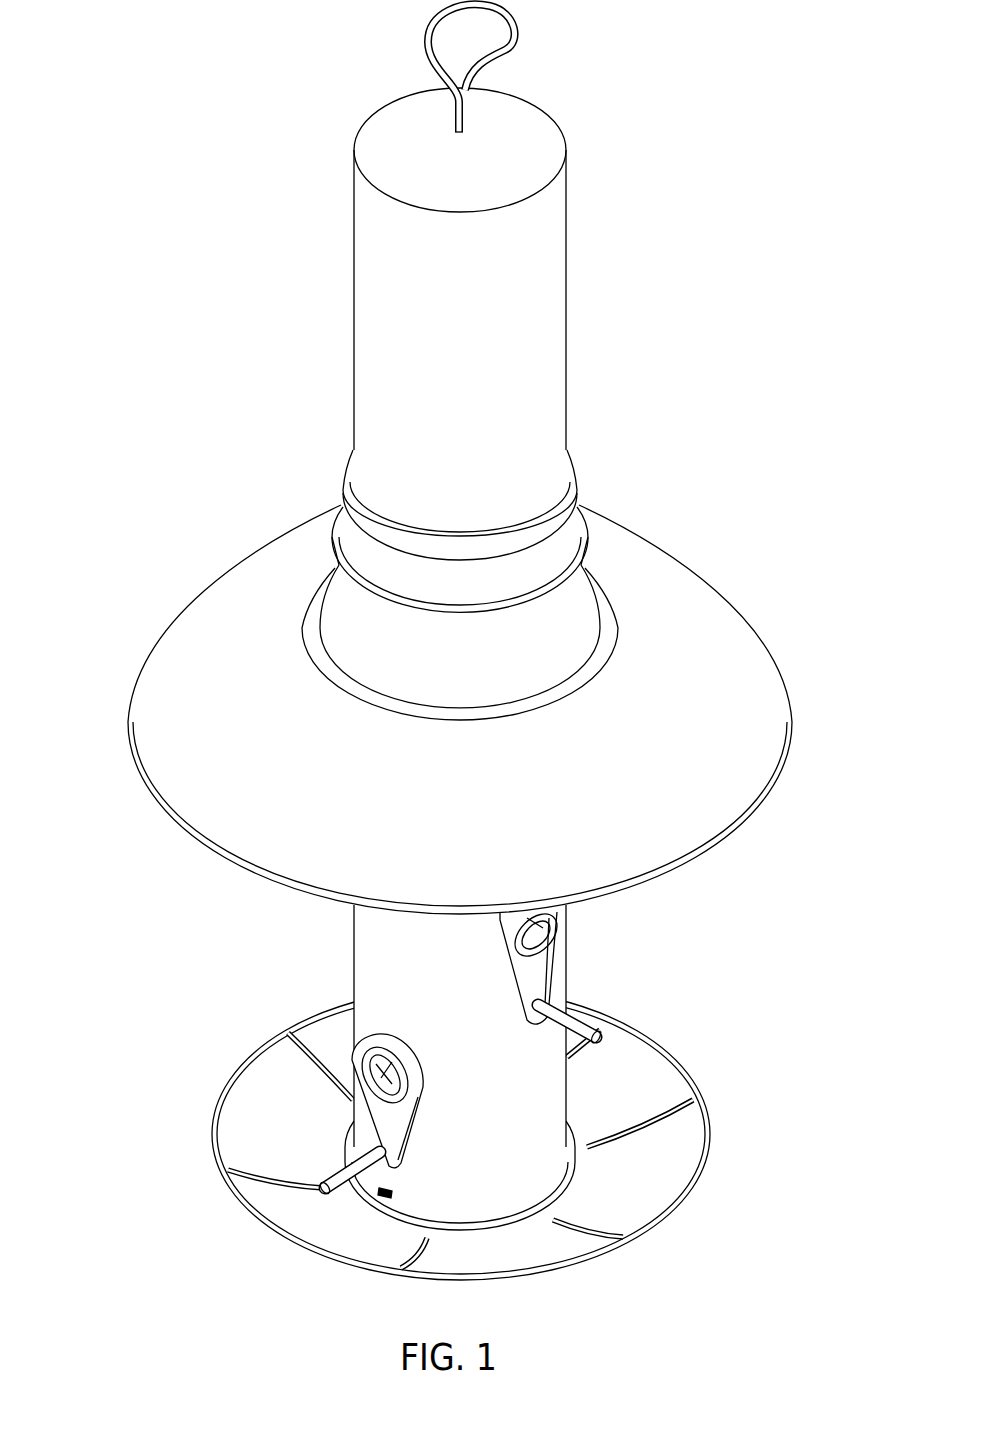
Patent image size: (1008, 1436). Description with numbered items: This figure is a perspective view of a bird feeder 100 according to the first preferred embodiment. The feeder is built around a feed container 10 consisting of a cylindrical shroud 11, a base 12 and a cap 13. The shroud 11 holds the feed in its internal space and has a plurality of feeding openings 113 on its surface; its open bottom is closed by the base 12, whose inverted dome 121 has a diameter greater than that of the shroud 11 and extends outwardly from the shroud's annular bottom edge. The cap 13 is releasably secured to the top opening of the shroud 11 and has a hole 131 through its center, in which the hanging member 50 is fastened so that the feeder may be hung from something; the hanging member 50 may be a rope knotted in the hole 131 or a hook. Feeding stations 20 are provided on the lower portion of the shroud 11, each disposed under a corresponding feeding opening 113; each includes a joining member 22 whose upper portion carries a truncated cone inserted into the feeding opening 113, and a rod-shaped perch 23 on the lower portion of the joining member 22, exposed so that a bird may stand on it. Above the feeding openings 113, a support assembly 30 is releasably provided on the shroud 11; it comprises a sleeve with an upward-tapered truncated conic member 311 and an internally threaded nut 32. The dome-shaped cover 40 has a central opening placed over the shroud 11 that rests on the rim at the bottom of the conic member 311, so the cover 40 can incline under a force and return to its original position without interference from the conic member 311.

The bird feeder 100 is at (142, 105).
The feed container 10 is at (335, 333).
The cylindrical shroud 11 is at (381, 967).
The feeding openings 113 is at (380, 1086).
The base 12 is at (328, 1265).
The inverted dome 121 is at (667, 1160).
The cap 13 is at (537, 145).
The hole 131 is at (452, 134).
The feeding stations 20 is at (802, 945).
The joining member 22 is at (545, 969).
The rod-shaped perch 23 is at (587, 1008).
The support assembly 30 is at (327, 518).
The truncated conic member 311 is at (353, 614).
The internally threaded nut 32 is at (540, 552).
The cover 40 is at (717, 696).
The hanging member 50 is at (427, 27).